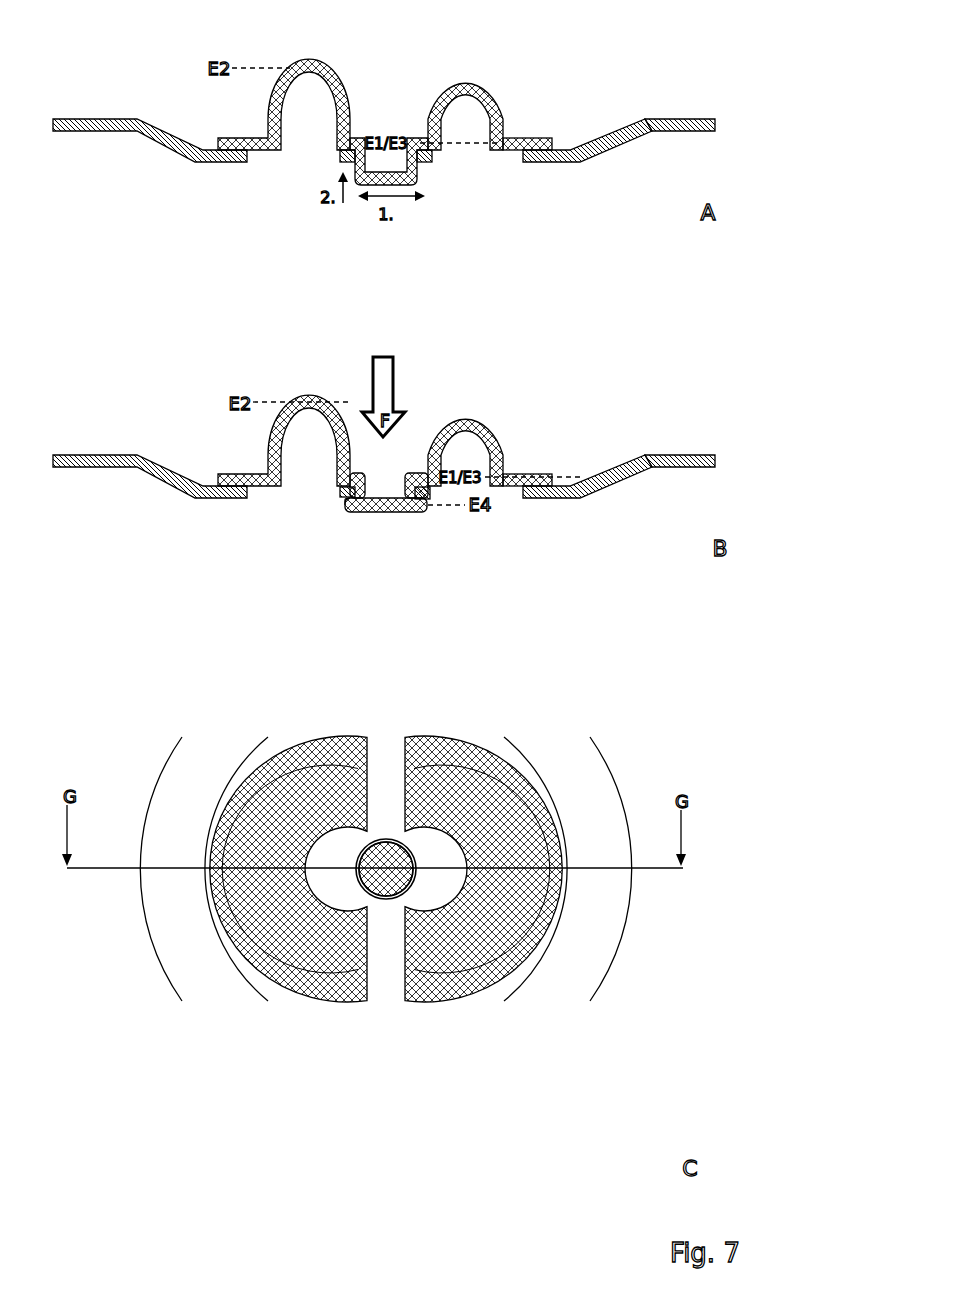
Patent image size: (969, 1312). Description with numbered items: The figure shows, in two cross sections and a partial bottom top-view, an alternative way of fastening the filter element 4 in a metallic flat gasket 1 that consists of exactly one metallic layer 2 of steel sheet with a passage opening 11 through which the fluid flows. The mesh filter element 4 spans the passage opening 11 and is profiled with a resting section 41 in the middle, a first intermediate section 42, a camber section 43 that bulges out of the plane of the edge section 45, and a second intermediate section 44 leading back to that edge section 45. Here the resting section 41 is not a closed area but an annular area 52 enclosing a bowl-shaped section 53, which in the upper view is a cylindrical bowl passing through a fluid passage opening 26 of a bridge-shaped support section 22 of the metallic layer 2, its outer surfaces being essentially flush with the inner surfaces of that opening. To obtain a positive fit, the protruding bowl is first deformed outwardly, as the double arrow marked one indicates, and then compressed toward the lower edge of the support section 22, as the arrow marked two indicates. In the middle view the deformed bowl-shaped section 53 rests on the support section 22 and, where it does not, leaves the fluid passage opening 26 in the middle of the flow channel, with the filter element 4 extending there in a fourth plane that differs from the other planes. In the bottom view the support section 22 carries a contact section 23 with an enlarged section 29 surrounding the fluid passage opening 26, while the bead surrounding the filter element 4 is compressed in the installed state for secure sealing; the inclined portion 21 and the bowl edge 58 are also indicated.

The metallic flat gasket 1 is at (93, 432).
The metallic layer 2 is at (690, 132).
The filter element 4 is at (247, 493).
The passage opening 11 is at (292, 501).
The inclined plate portion 21 is at (608, 133).
The support section 22 is at (342, 495).
The contact section 23 is at (512, 790).
The fluid passage opening 26 is at (437, 616).
The enlarged section 29 is at (425, 853).
The resting section 41 is at (353, 140).
The first intermediate section 42 is at (499, 550).
The camber section 43 is at (288, 568).
The second intermediate section 44 is at (536, 550).
The edge section 45 is at (523, 487).
The annular area 52 is at (412, 148).
The bowl-shaped section 53 is at (390, 183).
The cup edge 58 is at (357, 508).